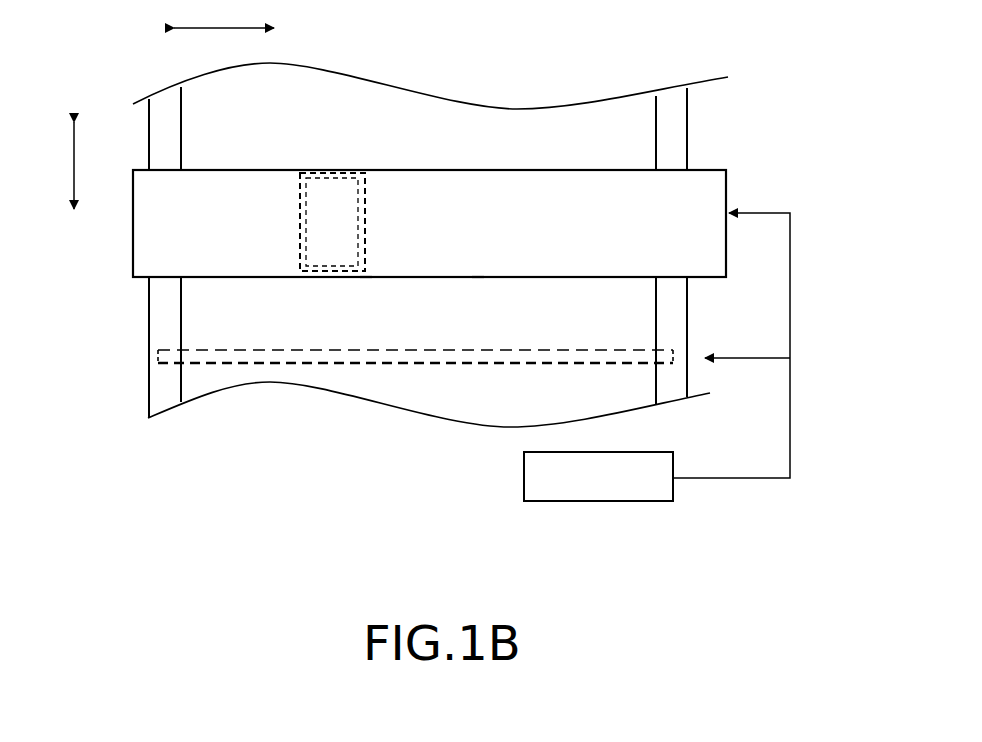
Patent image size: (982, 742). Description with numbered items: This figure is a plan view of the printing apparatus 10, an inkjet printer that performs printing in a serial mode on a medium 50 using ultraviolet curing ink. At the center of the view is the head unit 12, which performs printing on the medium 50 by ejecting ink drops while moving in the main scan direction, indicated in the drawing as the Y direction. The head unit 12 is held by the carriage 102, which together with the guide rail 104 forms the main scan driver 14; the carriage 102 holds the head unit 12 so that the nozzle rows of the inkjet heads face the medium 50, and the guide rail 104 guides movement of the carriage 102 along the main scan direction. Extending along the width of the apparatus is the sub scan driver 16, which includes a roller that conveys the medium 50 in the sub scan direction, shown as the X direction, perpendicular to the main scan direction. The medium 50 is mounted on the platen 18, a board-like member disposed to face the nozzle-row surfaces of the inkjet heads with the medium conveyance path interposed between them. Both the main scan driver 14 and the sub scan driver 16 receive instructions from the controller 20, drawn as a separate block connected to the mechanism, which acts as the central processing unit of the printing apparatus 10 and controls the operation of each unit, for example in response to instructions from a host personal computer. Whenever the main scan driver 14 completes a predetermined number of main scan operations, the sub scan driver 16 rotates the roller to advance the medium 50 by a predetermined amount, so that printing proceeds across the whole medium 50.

The printing apparatus 10 is at (822, 55).
The head unit 12 is at (348, 222).
The main scan driver 14 is at (481, 473).
The sub scan driver 16 is at (570, 352).
The platen 18 is at (680, 127).
The controller 20 is at (600, 502).
The medium 50 is at (515, 135).
The carriage 102 is at (365, 247).
The guide rail 104 is at (478, 268).